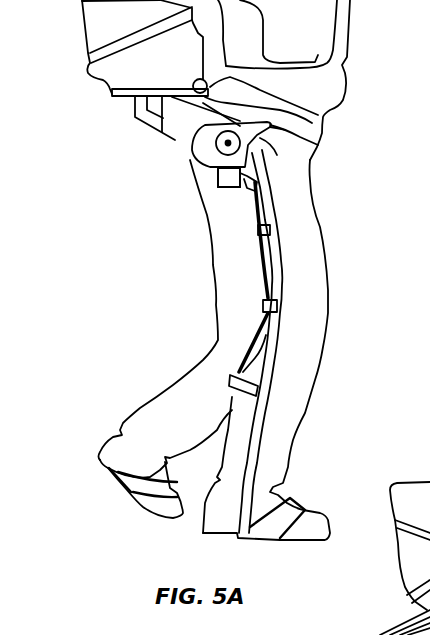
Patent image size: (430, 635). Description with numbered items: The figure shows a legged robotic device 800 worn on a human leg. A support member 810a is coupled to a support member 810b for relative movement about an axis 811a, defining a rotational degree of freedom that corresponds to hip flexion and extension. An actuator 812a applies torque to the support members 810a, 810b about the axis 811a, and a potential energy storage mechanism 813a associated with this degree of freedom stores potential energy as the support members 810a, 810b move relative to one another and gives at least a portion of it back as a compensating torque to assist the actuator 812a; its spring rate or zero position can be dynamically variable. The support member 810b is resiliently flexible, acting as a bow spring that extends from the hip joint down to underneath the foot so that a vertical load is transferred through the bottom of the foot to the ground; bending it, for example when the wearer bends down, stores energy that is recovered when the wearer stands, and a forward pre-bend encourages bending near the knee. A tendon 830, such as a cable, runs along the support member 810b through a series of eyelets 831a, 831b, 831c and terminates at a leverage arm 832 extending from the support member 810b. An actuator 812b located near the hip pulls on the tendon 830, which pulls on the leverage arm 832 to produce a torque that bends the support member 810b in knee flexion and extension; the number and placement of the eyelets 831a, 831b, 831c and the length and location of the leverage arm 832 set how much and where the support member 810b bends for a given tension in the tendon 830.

The legged robotic device 800 is at (105, 249).
The support member 810a is at (200, 153).
The support member 810b is at (288, 252).
The axis 811a is at (196, 142).
The actuator 812a is at (218, 168).
The potential energy storage mechanism 813a is at (218, 168).
The actuator 812b is at (220, 186).
The tendon 830 is at (262, 275).
The eyelet 831a is at (247, 184).
The eyelet 831b is at (258, 232).
The eyelet 831c is at (263, 305).
The leverage arm 832 is at (229, 390).